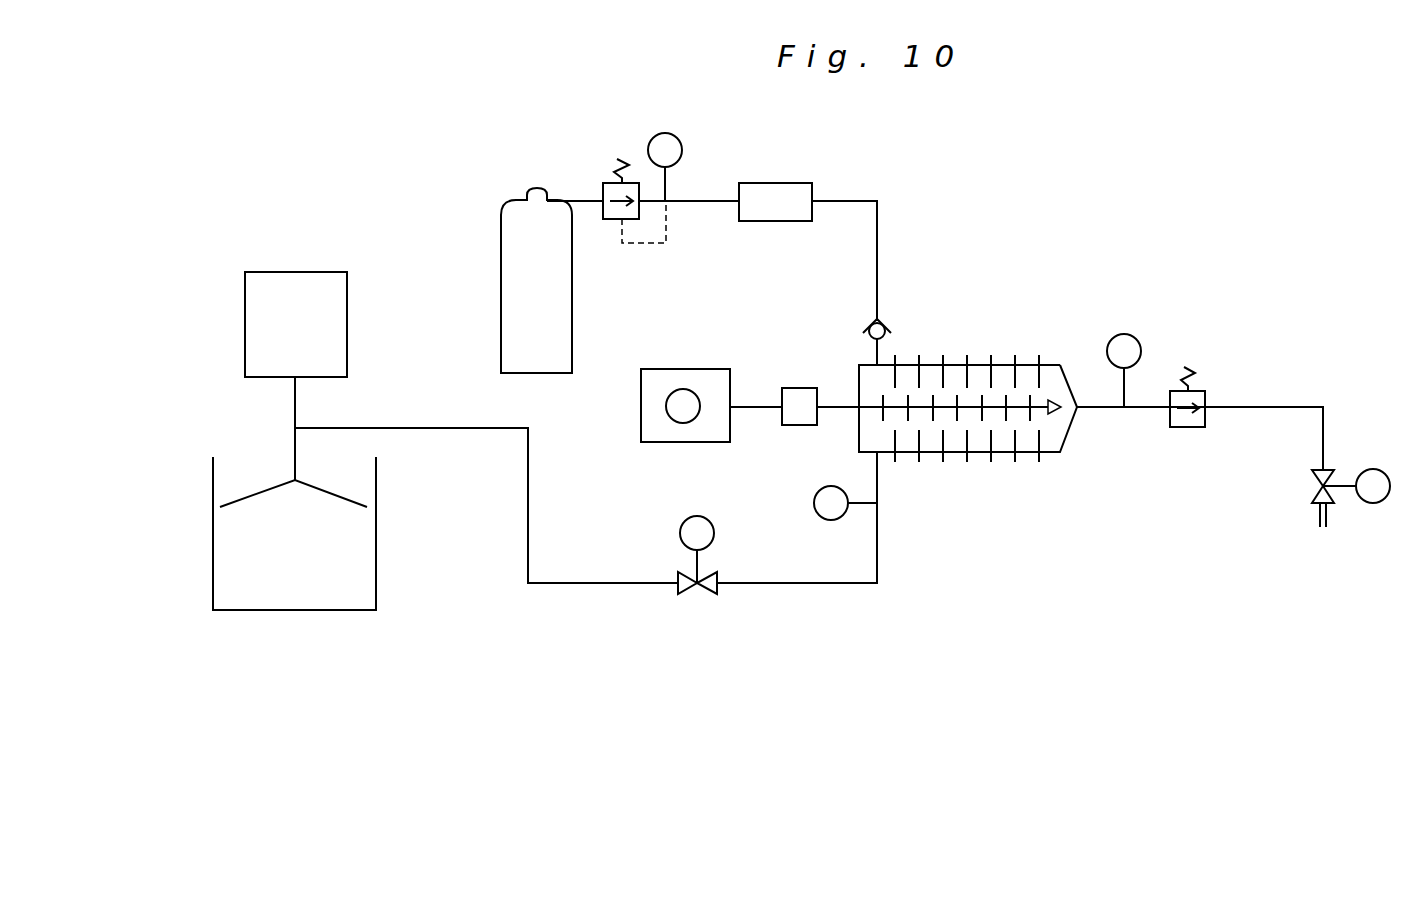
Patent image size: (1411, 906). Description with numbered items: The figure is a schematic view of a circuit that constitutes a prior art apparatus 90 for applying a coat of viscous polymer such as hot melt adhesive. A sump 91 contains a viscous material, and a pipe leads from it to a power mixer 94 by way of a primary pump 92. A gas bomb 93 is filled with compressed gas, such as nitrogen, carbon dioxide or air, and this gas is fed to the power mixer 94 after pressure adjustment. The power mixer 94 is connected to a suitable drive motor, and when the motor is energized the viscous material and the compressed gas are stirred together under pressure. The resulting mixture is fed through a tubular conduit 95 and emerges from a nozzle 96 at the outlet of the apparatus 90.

The apparatus 90 is at (397, 187).
The sump 91 is at (376, 543).
The primary pump 92 is at (347, 334).
The gas bomb 93 is at (501, 253).
The power mixer 94 is at (955, 365).
The tubular conduit 95 is at (1260, 407).
The nozzle 96 is at (1318, 514).